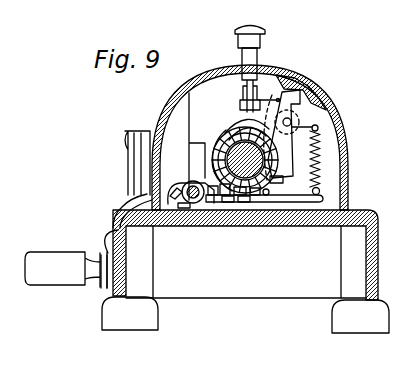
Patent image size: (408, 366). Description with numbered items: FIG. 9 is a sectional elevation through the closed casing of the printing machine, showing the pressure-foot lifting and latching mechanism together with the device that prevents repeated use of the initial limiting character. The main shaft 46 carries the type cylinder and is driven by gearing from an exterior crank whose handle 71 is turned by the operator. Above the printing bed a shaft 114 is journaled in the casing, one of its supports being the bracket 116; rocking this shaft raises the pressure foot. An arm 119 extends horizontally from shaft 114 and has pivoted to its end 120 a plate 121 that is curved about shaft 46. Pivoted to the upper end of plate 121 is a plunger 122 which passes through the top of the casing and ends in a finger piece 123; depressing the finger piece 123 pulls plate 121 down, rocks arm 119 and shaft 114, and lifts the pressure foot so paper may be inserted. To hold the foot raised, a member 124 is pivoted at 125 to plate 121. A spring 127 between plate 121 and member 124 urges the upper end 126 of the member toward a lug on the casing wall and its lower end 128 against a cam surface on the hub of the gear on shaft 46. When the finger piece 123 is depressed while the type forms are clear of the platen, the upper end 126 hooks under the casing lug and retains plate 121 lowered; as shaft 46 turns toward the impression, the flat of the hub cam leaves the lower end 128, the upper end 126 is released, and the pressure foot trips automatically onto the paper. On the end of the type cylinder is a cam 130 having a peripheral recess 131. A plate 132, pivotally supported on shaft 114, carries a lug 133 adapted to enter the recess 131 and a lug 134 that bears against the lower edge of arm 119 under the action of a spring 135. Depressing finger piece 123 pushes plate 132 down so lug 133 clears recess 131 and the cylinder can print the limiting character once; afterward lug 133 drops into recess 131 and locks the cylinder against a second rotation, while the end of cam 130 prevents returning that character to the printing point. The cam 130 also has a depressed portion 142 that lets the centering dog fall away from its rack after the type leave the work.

The shaft 46 is at (249, 130).
The handle 71 is at (48, 278).
The shaft 114 is at (183, 183).
The bracket 116 is at (135, 196).
The arm 119 is at (212, 195).
The end of arm 120 is at (244, 202).
The plate 121 is at (270, 196).
The plunger 122 is at (250, 65).
The finger piece 123 is at (258, 29).
The member 124 is at (300, 110).
The pivot 125 is at (292, 122).
The upper end of member 126 is at (300, 90).
The spring 127 is at (320, 158).
The lower end of member 128 is at (291, 186).
The cam 130 is at (280, 199).
The recess 131 is at (224, 195).
The plate 132 is at (255, 196).
The lug 133 is at (238, 202).
The lug 134 is at (228, 202).
The spring 135 is at (179, 208).
The depressed portion of cam 142 is at (238, 145).